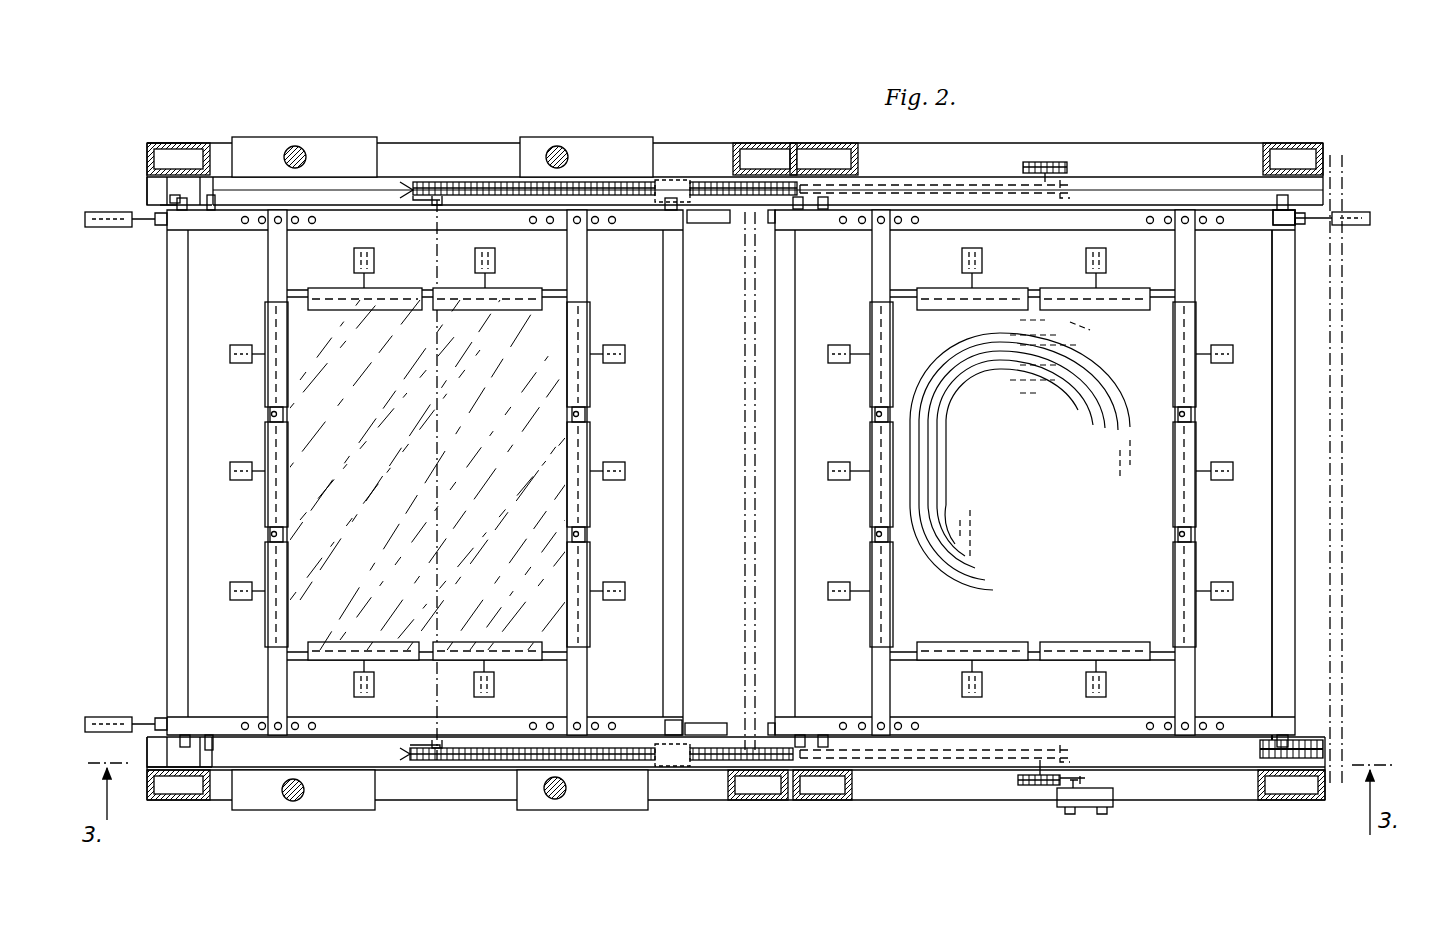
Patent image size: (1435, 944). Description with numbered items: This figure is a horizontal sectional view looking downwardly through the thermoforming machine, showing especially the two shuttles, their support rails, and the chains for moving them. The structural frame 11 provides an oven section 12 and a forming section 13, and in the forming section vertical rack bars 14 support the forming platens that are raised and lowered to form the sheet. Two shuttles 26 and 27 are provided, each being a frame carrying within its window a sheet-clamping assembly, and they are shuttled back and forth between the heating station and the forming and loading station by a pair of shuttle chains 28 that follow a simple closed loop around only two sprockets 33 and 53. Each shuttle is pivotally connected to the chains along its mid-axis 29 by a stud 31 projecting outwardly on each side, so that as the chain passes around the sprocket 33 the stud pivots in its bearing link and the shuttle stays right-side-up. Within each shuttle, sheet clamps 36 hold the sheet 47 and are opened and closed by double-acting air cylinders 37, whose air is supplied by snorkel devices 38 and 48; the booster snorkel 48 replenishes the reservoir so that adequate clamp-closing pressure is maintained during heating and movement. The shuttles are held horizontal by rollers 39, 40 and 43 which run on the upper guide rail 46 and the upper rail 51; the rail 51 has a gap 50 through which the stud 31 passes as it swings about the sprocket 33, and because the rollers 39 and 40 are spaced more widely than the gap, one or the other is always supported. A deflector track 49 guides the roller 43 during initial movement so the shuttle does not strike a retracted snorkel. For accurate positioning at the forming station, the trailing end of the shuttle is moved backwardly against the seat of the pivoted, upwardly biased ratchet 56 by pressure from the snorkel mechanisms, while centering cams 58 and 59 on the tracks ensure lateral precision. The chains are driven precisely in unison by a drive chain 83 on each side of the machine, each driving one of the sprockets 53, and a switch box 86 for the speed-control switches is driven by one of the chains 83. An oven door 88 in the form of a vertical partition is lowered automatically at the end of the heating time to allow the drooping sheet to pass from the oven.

The structural frame 11 is at (243, 99).
The oven section 12 is at (1000, 813).
The forming section 13 is at (228, 432).
The vertical rack bars 14 is at (302, 150).
The shuttle 26 is at (1300, 490).
The shuttle 27 is at (165, 321).
The shuttle chains 28 is at (612, 188).
The mid-axis 29 is at (440, 250).
The stud 31 is at (437, 204).
The sprocket 33 is at (408, 202).
The sheet clamps 36 is at (362, 304).
The air cylinders 37 is at (240, 345).
The snorkel device 38 is at (112, 228).
The roller 39 is at (175, 198).
The roller 40 is at (211, 195).
The roller 43 is at (1280, 196).
The upper guide rail 46 is at (1175, 770).
The sheet 47 is at (530, 432).
The booster snorkel assembly 48 is at (1362, 226).
The deflector track 49 is at (1310, 745).
The gap 50 is at (415, 198).
The upper rail 51 is at (335, 190).
The sprocket 53 is at (1075, 190).
The ratchet 56 is at (716, 224).
The centering cam 58 is at (190, 209).
The centering cam 59 is at (185, 740).
The drive chain 83 is at (1068, 168).
The switch box 86 is at (1085, 808).
The oven door 88 is at (747, 350).